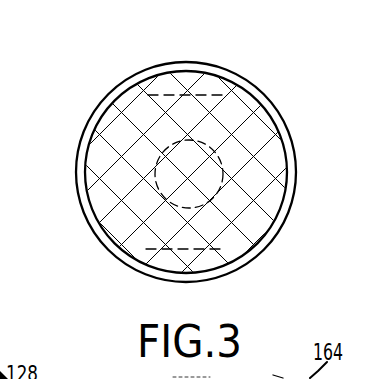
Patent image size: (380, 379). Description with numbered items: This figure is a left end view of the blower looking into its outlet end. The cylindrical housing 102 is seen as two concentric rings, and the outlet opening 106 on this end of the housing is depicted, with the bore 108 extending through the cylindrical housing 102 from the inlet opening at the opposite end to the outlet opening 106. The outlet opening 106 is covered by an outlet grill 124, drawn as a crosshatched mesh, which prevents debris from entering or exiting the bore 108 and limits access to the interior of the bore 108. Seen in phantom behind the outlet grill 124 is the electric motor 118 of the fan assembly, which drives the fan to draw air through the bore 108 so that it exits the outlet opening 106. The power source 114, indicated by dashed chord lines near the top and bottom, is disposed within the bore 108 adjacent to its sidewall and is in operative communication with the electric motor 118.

The cylindrical housing 102 is at (283, 124).
The bore 108 is at (287, 173).
The outlet opening 106 is at (246, 233).
The electric motor 118 is at (163, 183).
The power source 114 is at (201, 79).
The outlet grill 124 is at (222, 103).